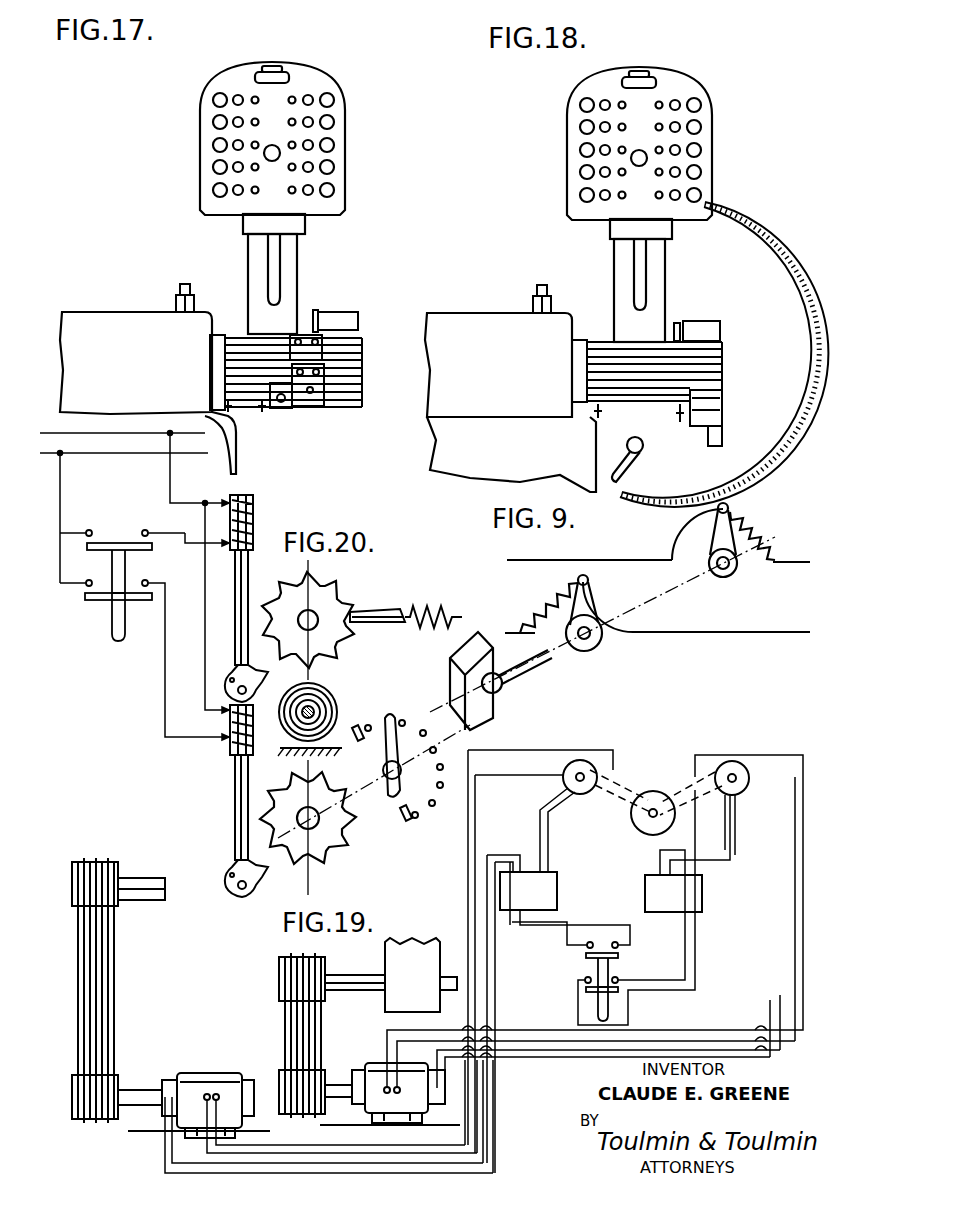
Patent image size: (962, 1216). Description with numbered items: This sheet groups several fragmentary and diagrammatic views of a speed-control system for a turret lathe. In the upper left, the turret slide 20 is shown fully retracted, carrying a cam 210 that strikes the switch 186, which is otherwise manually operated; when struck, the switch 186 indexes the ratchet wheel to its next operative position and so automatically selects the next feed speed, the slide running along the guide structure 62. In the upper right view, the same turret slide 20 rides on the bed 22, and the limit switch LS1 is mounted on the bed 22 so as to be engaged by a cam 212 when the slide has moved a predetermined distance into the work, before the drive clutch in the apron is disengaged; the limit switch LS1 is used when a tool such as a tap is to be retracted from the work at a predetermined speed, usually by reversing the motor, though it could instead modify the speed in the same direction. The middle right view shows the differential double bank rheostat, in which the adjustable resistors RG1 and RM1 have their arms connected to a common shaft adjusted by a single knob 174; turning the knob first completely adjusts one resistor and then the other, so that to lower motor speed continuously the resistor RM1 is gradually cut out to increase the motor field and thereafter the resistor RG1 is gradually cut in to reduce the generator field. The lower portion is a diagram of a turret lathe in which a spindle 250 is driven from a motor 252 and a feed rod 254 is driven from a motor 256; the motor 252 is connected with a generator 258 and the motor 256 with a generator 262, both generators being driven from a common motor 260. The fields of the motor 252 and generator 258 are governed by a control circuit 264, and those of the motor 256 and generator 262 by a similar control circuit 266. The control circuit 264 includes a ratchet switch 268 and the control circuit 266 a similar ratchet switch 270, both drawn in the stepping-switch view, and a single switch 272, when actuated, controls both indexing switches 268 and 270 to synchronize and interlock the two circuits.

In FIG. 17, the turret slide 20 is at (117, 332).
In FIG. 18, the turret slide 20 is at (481, 325).
In FIG. 18, the bed 22 is at (556, 470).
In FIG. 17, the guide rail assembly 62 is at (252, 388).
In FIG. 18, the guide rail assembly 62 is at (628, 380).
In FIG. 9, the knob 174 is at (488, 710).
In FIG. 17, the switch 186 is at (281, 264).
In FIG. 18, the switch 186 is at (648, 272).
In FIG. 17, the cam 210 is at (178, 305).
In FIG. 18, the cam 210 is at (535, 303).
In FIG. 18, the cam 212 is at (722, 436).
In FIG. 18, the limit switch LS1 is at (620, 478).
In FIG. 9, the adjustable resistor RM1 is at (770, 530).
In FIG. 9, the adjustable resistor RG1 is at (530, 616).
In FIG. 20, the ratchet switch 268 is at (298, 568).
In FIG. 17, the ratchet switch 270 is at (216, 777).
In FIG. 17, the single switch 272 is at (104, 610).
In FIG. 19, the single switch 272 is at (619, 966).
In FIG. 19, the spindle 250 is at (148, 892).
In FIG. 19, the motor 252 is at (196, 1086).
In FIG. 19, the feed rod 254 is at (362, 980).
In FIG. 19, the motor 256 is at (375, 1068).
In FIG. 19, the generator 258 is at (593, 766).
In FIG. 19, the motor 260 is at (655, 796).
In FIG. 19, the generator 262 is at (738, 765).
In FIG. 19, the control circuit 264 is at (548, 882).
In FIG. 19, the control circuit 266 is at (696, 892).